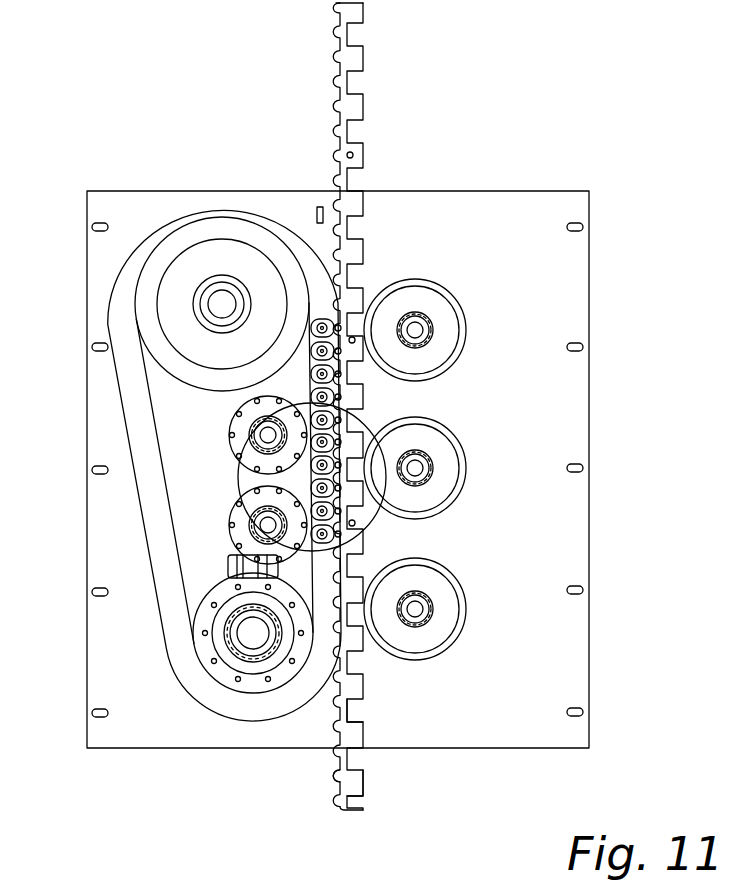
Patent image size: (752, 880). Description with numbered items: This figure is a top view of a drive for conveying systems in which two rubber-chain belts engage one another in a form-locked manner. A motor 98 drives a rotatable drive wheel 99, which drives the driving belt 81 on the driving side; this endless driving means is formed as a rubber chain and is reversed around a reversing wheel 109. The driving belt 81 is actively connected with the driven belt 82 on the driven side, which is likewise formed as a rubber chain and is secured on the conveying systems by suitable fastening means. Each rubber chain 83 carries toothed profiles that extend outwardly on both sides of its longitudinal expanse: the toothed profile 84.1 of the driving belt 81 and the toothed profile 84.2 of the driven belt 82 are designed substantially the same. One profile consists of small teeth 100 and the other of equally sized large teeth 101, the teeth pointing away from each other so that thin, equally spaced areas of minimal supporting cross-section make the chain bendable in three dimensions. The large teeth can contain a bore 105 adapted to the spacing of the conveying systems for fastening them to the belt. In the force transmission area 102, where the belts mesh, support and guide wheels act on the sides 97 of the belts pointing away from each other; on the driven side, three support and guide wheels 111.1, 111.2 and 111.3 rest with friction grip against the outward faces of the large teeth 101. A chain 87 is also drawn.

The driving belt 81 is at (208, 202).
The driven belt 82 is at (353, 80).
The rubber chain 83 is at (378, 155).
The toothed profile 84.1 is at (332, 810).
The toothed profile 84.2 is at (313, 97).
The chain 87 is at (273, 599).
The opposite side 97 is at (352, 430).
The motor 98 is at (228, 572).
The drive wheel 99 is at (225, 663).
The small teeth 100 is at (332, 757).
The teeth 101 is at (380, 777).
The force transmission area 102 is at (329, 638).
The bore 105 is at (363, 703).
The reversing wheel 109 is at (182, 275).
The support and guide wheel 111.1 is at (442, 312).
The support and guide wheel 111.2 is at (447, 450).
The support and guide wheel 111.3 is at (445, 590).